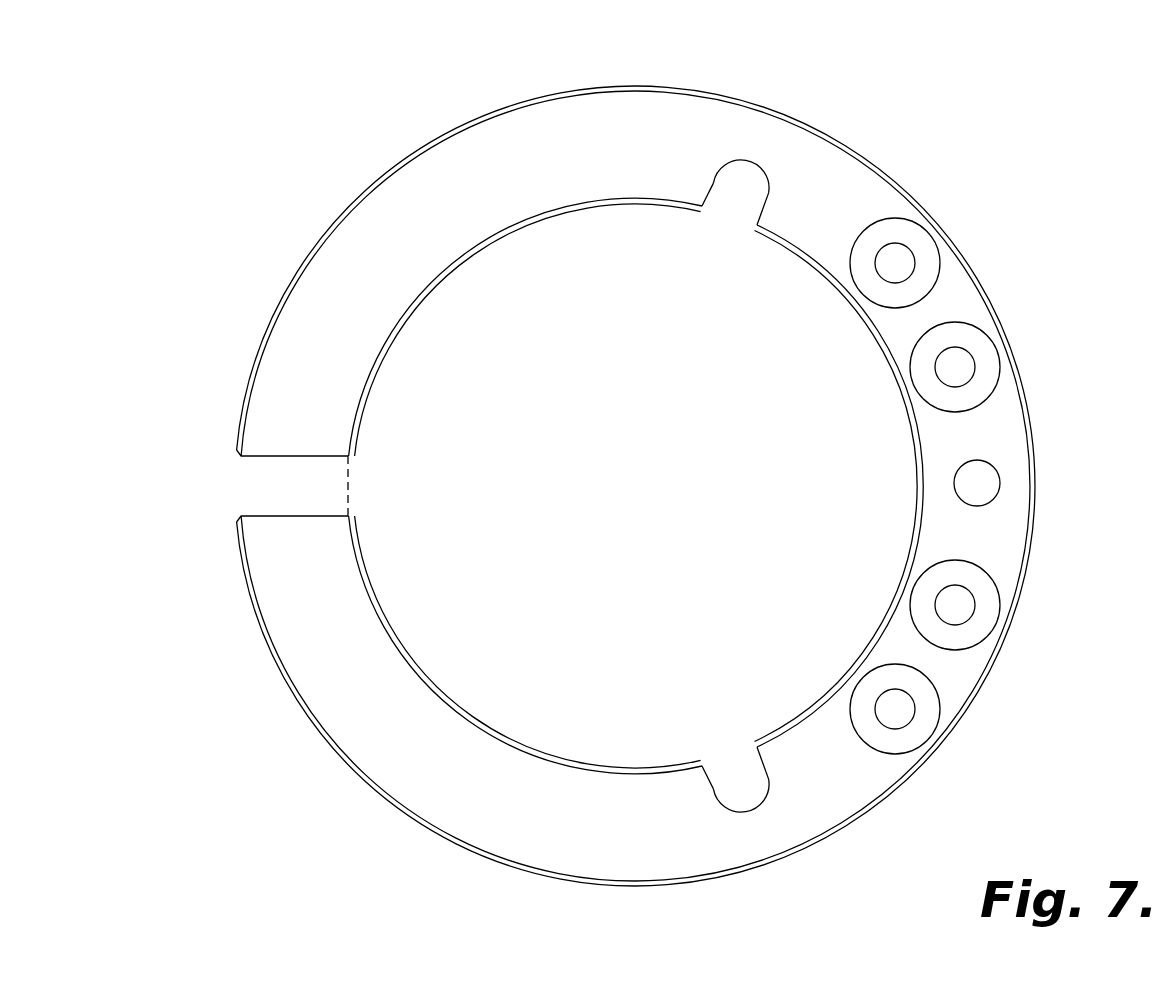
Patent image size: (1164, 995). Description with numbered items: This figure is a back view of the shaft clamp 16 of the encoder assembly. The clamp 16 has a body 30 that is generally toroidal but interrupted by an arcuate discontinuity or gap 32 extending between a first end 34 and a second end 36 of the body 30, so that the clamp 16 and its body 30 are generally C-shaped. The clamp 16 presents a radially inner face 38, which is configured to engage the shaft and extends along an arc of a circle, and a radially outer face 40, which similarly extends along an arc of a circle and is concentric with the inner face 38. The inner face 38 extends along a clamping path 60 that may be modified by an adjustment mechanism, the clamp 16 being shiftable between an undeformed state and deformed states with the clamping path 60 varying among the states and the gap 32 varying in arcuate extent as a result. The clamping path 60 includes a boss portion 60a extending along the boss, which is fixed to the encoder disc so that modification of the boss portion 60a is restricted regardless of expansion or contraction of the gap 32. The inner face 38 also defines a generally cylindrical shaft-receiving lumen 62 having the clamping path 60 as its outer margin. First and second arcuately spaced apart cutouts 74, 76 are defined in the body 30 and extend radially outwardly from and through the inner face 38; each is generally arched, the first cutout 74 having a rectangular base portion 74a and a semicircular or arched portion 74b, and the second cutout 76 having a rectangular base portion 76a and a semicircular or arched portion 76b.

The shaft clamp 16 is at (1016, 155).
The body 30 is at (402, 200).
The gap 32 is at (234, 484).
The first end 34 is at (285, 440).
The second end 36 is at (283, 527).
The radially inner face 38 is at (616, 198).
The radially outer face 40 is at (843, 145).
The clamping path 60 is at (364, 475).
The boss portion 60a is at (885, 596).
The shaft-receiving lumen 62 is at (524, 282).
The first cutout 74 is at (731, 176).
The rectangular base portion 74a is at (729, 229).
The semicircular or arched portion 74b is at (765, 169).
The second cutout 76 is at (714, 794).
The rectangular base portion 76a is at (727, 747).
The semicircular or arched portion 76b is at (764, 810).